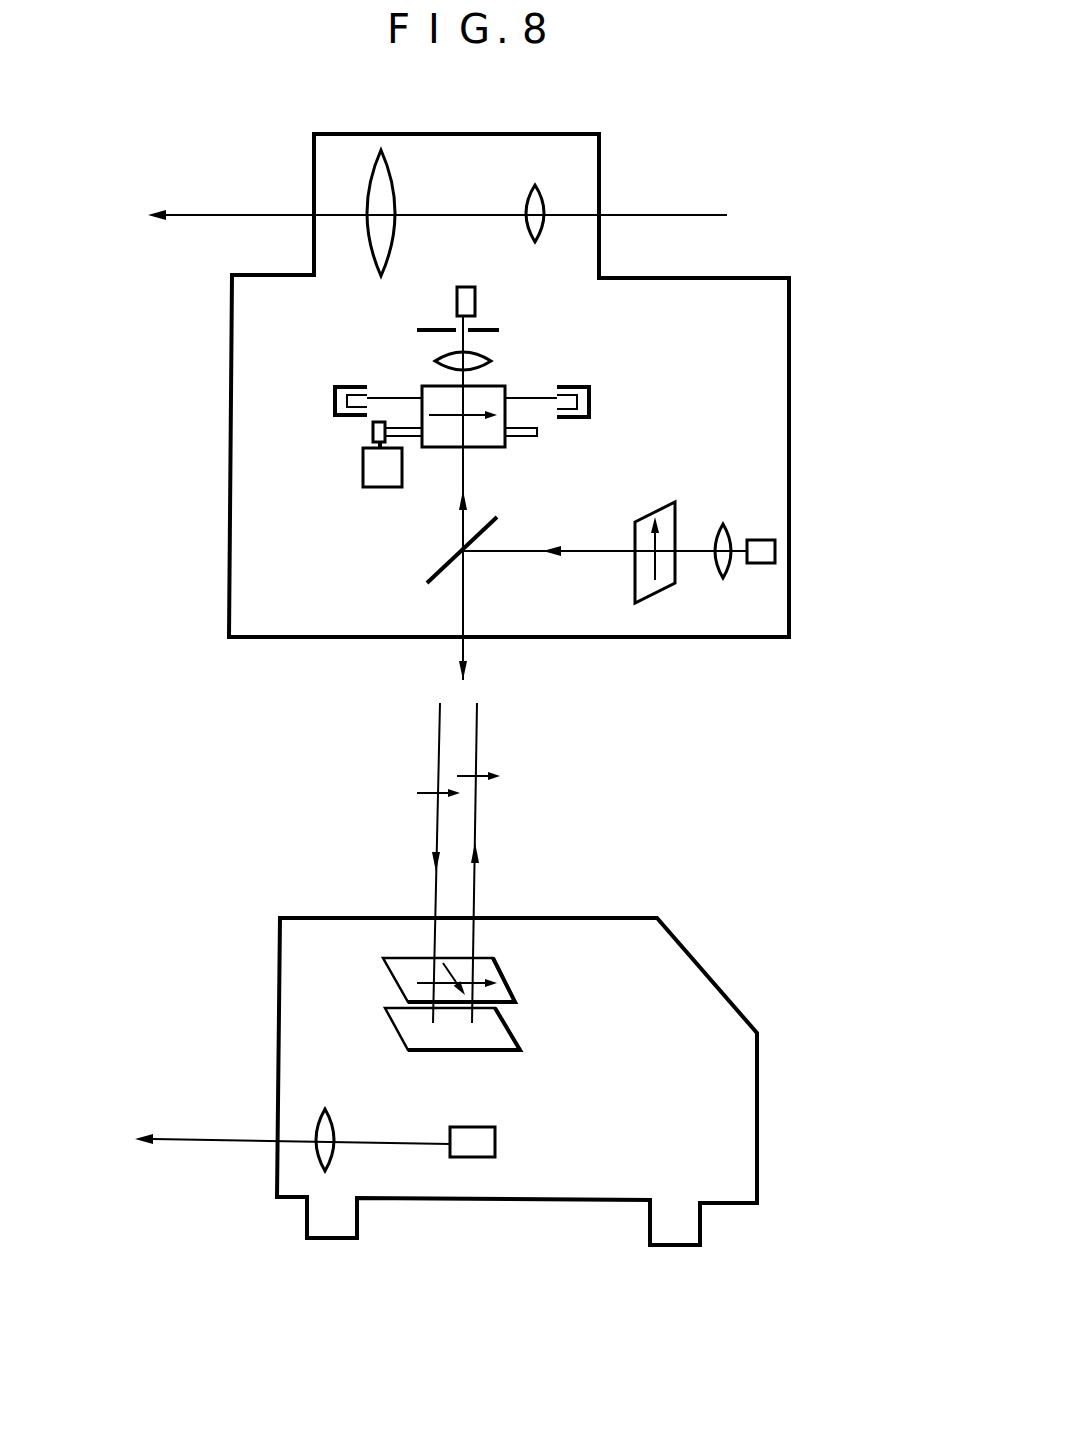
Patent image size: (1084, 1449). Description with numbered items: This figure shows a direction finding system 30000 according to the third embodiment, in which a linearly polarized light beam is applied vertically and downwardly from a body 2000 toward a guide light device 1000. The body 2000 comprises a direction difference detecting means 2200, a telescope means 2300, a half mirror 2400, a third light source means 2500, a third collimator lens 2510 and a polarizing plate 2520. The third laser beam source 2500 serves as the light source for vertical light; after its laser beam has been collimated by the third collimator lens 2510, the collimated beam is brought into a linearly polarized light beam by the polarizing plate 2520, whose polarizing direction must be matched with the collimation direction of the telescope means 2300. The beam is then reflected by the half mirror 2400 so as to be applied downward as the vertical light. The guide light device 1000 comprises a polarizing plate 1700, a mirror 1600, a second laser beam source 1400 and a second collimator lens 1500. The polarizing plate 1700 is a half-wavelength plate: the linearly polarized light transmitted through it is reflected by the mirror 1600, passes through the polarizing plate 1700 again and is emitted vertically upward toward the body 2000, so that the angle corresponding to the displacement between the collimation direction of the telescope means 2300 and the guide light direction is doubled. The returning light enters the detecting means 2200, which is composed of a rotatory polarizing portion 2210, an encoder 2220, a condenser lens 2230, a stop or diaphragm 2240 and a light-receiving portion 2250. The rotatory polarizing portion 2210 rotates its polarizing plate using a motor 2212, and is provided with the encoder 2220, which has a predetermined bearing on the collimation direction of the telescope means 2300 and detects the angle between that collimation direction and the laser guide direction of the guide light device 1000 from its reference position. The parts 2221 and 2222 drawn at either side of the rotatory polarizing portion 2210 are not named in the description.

The direction finding system 30000 is at (250, 1233).
The body 2000 is at (730, 710).
The telescope means 2300 is at (480, 172).
The direction difference detecting means 2200 is at (578, 282).
The light-receiving portion 2250 is at (517, 285).
The stop or diaphragm 2240 is at (502, 330).
The condenser lens 2230 is at (493, 361).
The encoder 2220 is at (410, 378).
The left holder 2221 is at (340, 385).
The right holder 2222 is at (595, 402).
The motor 2212 is at (365, 460).
The rotatory polarizing portion 2210 is at (489, 449).
The half mirror 2400 is at (443, 570).
The polarizing plate 2520 is at (640, 517).
The third collimator lens 2510 is at (732, 500).
The third light source means 2500 is at (765, 565).
The guide light device 1000 is at (763, 922).
The polarizing plate 1700 is at (573, 972).
The mirror 1600 is at (502, 1038).
The second collimator lens 1500 is at (335, 1123).
The second laser beam source 1400 is at (500, 1145).